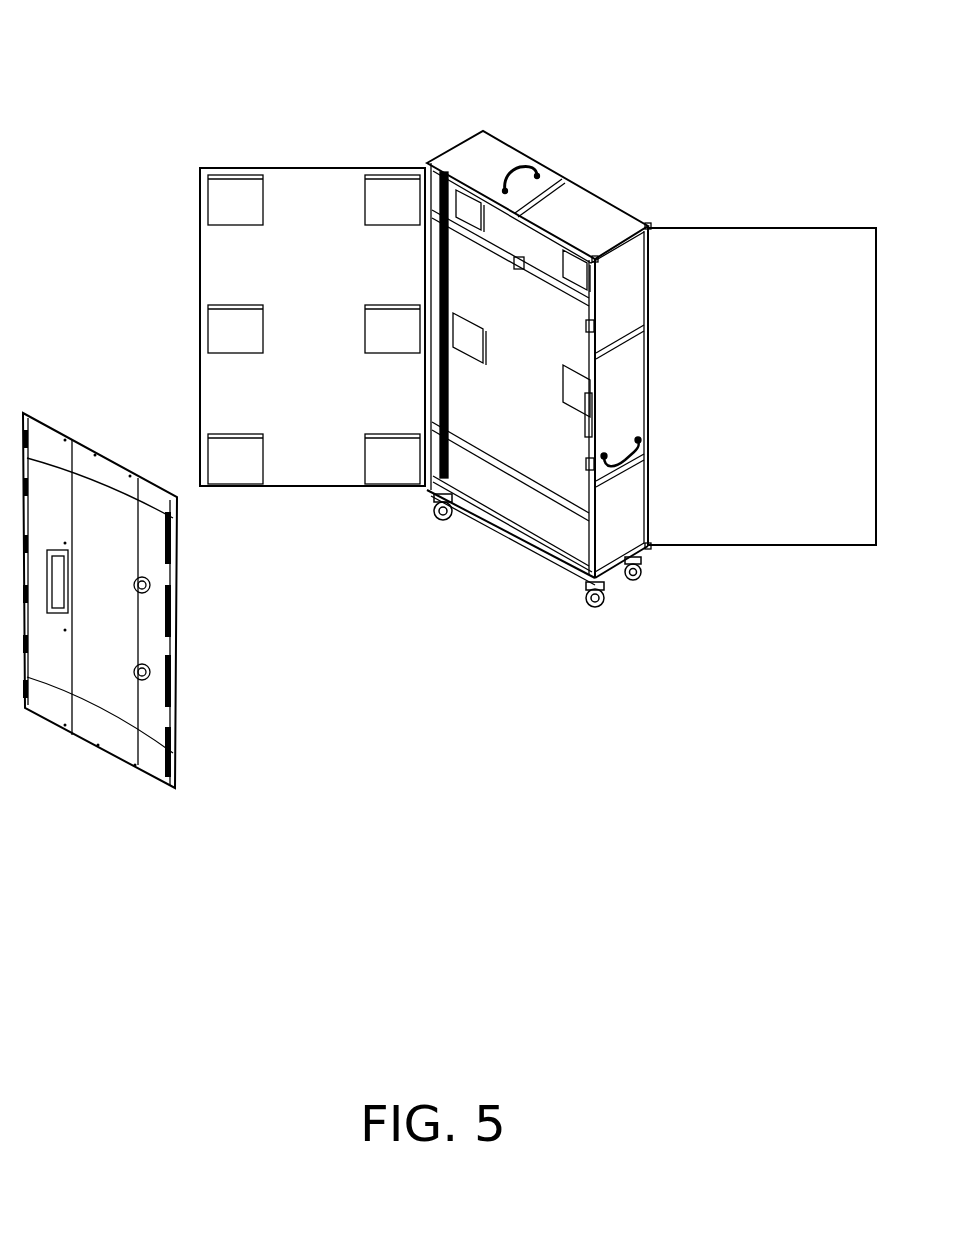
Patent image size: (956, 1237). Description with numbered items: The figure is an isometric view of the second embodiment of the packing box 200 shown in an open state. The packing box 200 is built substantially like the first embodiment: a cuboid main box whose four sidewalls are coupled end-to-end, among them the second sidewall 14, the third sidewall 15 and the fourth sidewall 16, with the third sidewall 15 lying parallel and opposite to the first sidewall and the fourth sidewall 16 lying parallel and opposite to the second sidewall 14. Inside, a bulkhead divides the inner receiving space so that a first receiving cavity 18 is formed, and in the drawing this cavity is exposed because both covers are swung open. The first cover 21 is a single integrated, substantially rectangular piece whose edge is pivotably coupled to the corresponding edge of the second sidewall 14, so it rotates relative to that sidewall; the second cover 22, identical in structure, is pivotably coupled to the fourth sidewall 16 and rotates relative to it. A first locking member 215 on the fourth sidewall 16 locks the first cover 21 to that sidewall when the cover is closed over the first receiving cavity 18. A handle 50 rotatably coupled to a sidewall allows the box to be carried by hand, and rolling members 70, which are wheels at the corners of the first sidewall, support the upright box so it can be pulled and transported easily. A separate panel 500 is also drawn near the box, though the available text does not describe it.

The packing box 200 is at (166, 46).
The second sidewall 14 is at (455, 147).
The third sidewall 15 is at (568, 205).
The fourth sidewall 16 is at (628, 256).
The first receiving cavity 18 is at (517, 436).
The first cover 21 is at (285, 168).
The second cover 22 is at (715, 258).
The handle 50 is at (650, 470).
The rolling member 70 is at (597, 607).
The first locking member 215 is at (565, 557).
The panel 500 is at (125, 742).